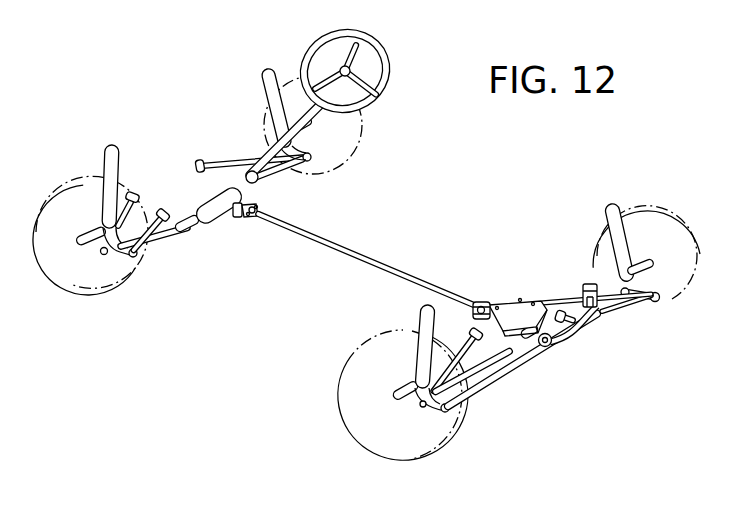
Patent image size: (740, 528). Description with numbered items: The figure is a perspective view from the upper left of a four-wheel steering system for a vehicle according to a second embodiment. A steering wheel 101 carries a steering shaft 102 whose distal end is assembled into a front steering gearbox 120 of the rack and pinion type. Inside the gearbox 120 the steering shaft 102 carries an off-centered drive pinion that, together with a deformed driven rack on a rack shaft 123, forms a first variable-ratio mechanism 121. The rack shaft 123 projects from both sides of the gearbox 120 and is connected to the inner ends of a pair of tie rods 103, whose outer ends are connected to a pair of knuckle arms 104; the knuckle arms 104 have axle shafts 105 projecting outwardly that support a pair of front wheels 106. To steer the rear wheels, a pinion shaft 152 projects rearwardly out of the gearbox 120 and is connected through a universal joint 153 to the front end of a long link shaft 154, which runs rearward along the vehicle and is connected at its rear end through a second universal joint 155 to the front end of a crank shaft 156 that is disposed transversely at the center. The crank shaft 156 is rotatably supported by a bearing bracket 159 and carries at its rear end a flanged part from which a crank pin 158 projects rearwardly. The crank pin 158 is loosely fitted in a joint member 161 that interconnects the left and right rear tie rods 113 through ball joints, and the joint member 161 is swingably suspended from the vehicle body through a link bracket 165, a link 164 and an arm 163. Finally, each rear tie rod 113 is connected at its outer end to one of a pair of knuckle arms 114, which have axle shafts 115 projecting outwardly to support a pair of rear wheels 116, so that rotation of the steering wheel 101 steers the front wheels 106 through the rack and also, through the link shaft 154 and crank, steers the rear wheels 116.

The steering wheel 101 is at (382, 62).
The steering shaft 102 is at (276, 138).
The tie rods 103 is at (163, 248).
The knuckle arms 104 is at (118, 258).
The axle shafts 105 is at (84, 230).
The front wheels 106 is at (68, 272).
The tie rods 113 is at (492, 381).
The knuckle arms 114 is at (431, 420).
The axle shafts 115 is at (395, 392).
The rear wheels 116 is at (384, 444).
The front steering gearbox 120 is at (207, 200).
The first variable-ratio mechanism 121 is at (275, 183).
The rack shaft 123 is at (190, 236).
The pinion shaft 152 is at (242, 222).
The universal joint 153 is at (262, 210).
The link shaft 154 is at (352, 262).
The universal joint 155 is at (477, 302).
The crank shaft 156 is at (532, 326).
The crank pin 158 is at (550, 348).
The bearing bracket 159 is at (512, 305).
The joint member 161 is at (541, 362).
The arm 163 is at (578, 344).
The link 164 is at (580, 322).
The link bracket 165 is at (587, 284).